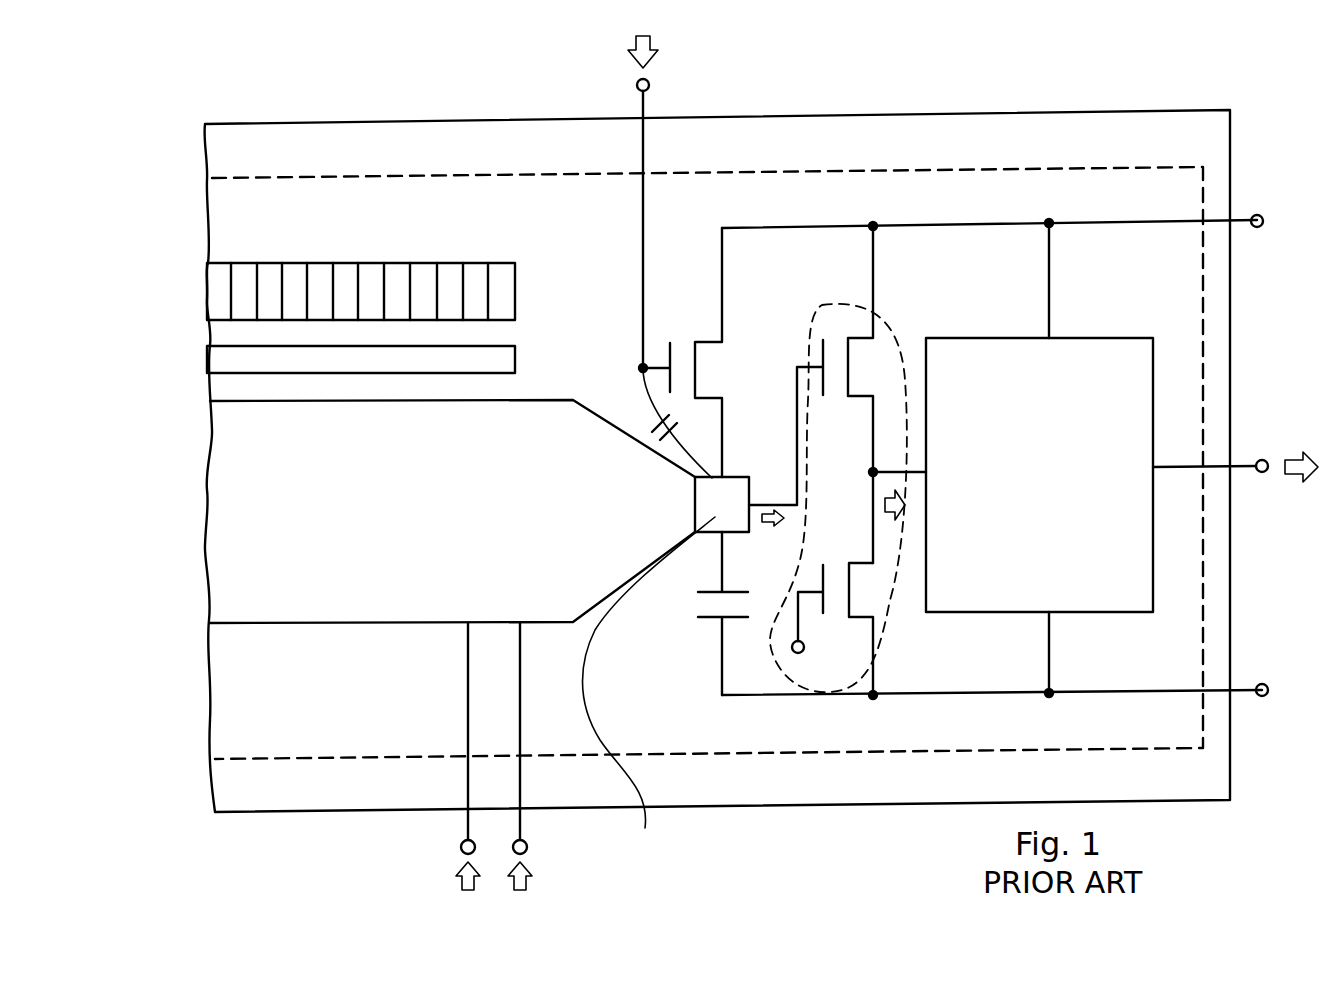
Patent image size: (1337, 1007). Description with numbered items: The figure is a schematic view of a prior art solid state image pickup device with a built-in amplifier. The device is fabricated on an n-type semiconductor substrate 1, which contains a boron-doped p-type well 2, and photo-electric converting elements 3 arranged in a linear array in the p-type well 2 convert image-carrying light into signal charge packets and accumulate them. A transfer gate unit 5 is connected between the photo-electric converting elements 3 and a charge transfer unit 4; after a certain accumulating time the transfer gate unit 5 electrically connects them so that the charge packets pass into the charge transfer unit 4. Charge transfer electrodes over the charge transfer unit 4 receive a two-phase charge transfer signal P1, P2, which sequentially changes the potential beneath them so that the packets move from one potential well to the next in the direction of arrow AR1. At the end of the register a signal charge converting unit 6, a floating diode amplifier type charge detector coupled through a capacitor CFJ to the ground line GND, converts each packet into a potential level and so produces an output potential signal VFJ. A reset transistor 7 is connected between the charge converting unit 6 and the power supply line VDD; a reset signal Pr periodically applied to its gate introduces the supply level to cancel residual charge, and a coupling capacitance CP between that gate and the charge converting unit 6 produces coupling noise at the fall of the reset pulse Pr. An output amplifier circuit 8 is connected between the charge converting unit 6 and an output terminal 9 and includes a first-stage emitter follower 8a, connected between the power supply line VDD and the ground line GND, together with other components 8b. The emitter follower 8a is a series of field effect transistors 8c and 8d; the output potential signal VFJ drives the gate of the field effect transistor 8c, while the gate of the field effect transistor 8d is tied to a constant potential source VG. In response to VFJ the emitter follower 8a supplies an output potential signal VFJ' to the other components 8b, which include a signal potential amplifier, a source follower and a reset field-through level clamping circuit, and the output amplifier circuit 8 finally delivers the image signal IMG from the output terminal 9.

The n-type semiconductor substrate 1 is at (1230, 558).
The p-type well 2 is at (1203, 595).
The photo-electric converting elements 3 is at (219, 254).
The charge transfer unit 4 is at (230, 533).
The transfer gate unit 5 is at (224, 358).
The signal charge converting unit 6 is at (649, 687).
The reset transistor 7 is at (658, 357).
The output amplifier circuit 8 is at (971, 460).
The first-stage emitter follower 8a is at (846, 459).
The other components 8b is at (1153, 373).
The field effect transistor 8c is at (820, 351).
The field effect transistor 8d is at (821, 604).
The output terminal 9 is at (1266, 460).
The reset signal Pr is at (636, 38).
The two-phase charge transfer signal P1 is at (528, 882).
The two-phase charge transfer signal P2 is at (458, 886).
The coupling capacitance CP is at (680, 423).
The capacitor CFJ is at (722, 620).
The arrow AR1 is at (677, 507).
The output potential signal VFJ is at (776, 534).
The output potential signal VFJ' is at (918, 574).
The constant potential source VG is at (807, 662).
The power supply line VDD is at (1280, 196).
The ground line GND is at (1280, 670).
The image signal IMG is at (1304, 485).